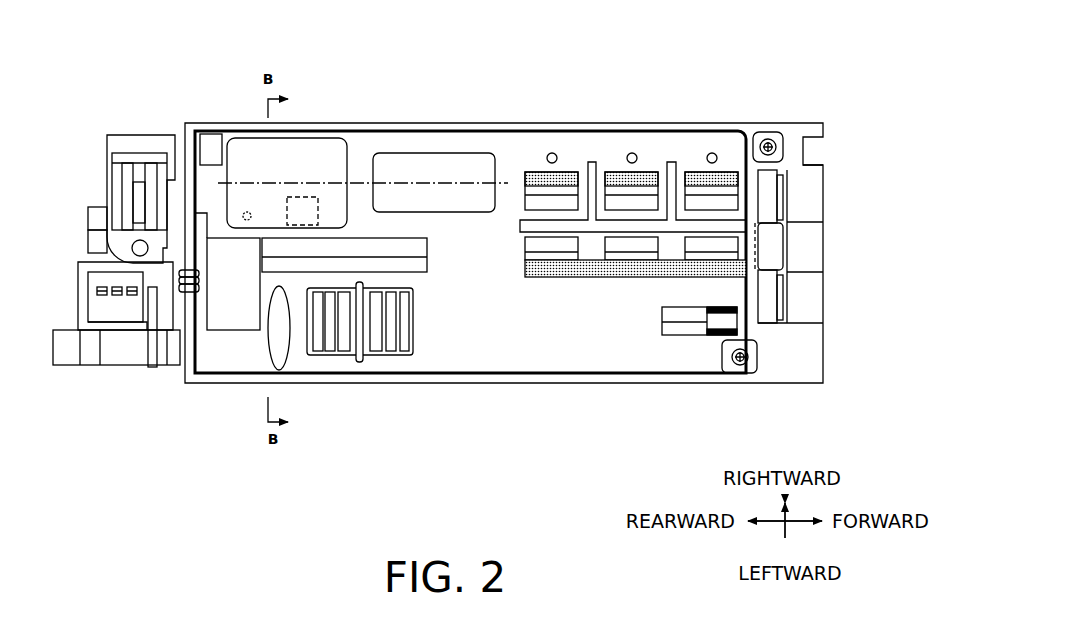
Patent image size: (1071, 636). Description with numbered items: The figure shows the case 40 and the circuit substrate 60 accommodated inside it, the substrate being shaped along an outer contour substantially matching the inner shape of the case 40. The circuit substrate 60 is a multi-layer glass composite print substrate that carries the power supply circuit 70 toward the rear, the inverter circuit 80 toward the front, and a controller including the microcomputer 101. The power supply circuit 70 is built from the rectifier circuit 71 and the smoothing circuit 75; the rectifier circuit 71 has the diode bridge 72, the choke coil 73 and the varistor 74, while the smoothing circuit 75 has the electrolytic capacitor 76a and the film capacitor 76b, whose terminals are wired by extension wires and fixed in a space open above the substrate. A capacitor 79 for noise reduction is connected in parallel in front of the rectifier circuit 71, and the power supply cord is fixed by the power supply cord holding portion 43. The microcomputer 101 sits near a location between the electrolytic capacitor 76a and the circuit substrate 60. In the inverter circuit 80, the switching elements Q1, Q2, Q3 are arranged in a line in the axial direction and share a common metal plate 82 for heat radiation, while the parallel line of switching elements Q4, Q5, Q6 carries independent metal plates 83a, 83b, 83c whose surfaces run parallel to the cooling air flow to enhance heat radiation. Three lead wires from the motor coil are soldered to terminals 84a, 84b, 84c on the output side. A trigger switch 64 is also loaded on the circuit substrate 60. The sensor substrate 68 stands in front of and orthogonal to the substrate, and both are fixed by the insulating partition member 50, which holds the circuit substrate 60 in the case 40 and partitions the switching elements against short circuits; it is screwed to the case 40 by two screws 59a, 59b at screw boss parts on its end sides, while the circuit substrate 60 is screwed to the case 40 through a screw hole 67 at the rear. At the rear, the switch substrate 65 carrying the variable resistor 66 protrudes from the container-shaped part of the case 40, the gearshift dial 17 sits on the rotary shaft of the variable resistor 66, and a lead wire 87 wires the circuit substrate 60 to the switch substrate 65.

The gearshift dial 17 is at (67, 358).
The case 40 is at (468, 123).
The power supply cord holding portion 43 is at (107, 144).
The partition member 50 is at (772, 250).
The screw 59a is at (750, 367).
The screw 59b is at (770, 140).
The circuit substrate 60 is at (457, 327).
The trigger switch 64 is at (712, 322).
The switch substrate 65 is at (165, 303).
The variable resistor 66 is at (107, 307).
The screw hole 67 is at (242, 215).
The sensor substrate 68 is at (770, 205).
The power supply circuit 70 is at (210, 348).
The rectifier circuit 71 is at (388, 449).
The diode bridge 72 is at (410, 263).
The choke coil 73 is at (352, 343).
The varistor 74 is at (277, 355).
The smoothing circuit 75 is at (402, 82).
The electrolytic capacitor 76a is at (396, 167).
The film capacitor 76b is at (307, 160).
The capacitor 79 is at (237, 318).
The inverter circuit 80 is at (735, 282).
The metal plate 82 is at (527, 270).
The metal plate 83a is at (688, 178).
The metal plate 83b is at (607, 178).
The metal plate 83c is at (528, 178).
The terminal 84a is at (712, 153).
The terminal 84b is at (632, 153).
The terminal 84c is at (552, 153).
The lead wire 87 is at (177, 280).
The microcomputer 101 is at (285, 198).
The switching element Q1 is at (705, 248).
The switching element Q2 is at (627, 250).
The switching element Q3 is at (557, 250).
The switching element Q4 is at (727, 200).
The switching element Q5 is at (648, 200).
The switching element Q6 is at (567, 200).